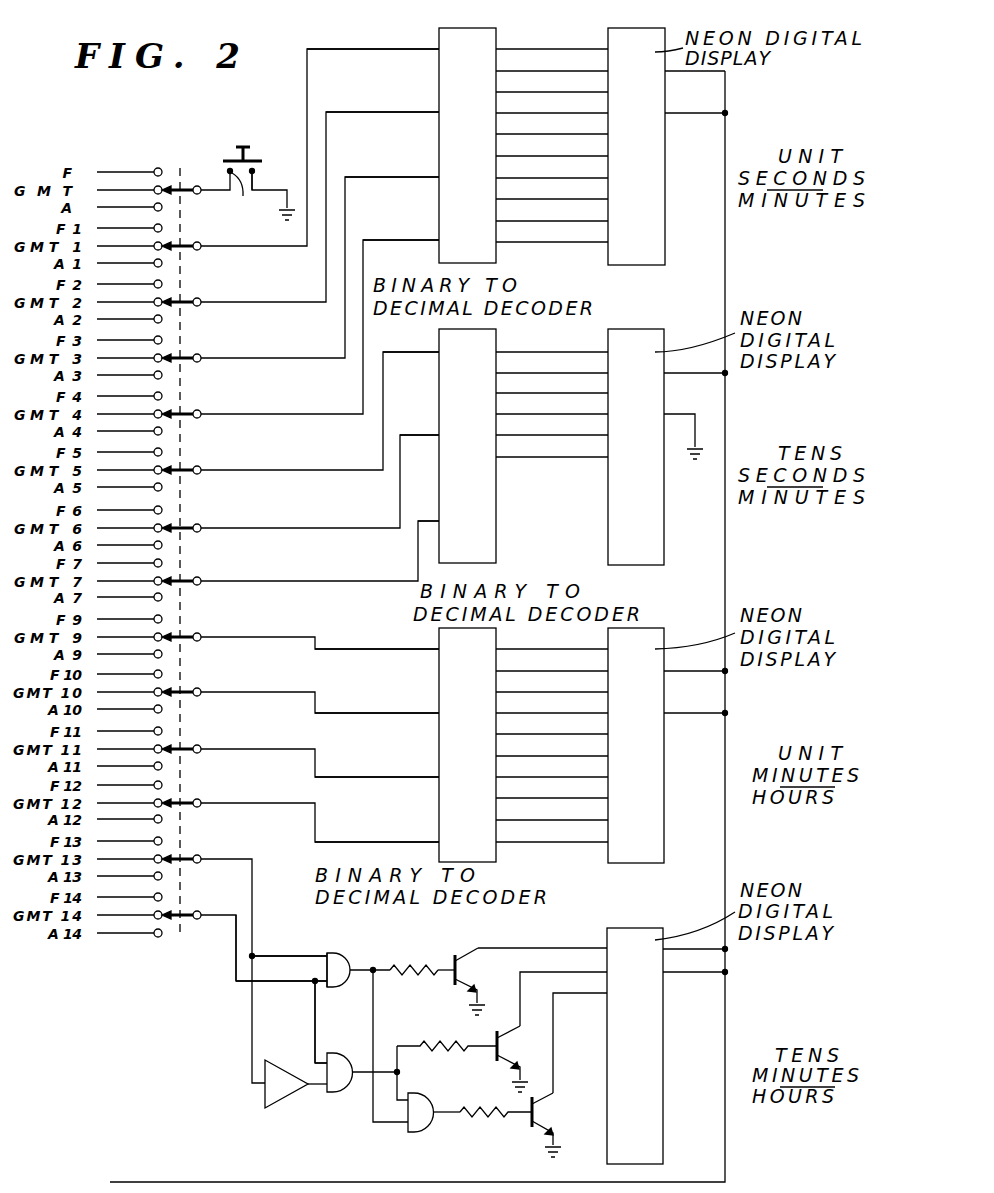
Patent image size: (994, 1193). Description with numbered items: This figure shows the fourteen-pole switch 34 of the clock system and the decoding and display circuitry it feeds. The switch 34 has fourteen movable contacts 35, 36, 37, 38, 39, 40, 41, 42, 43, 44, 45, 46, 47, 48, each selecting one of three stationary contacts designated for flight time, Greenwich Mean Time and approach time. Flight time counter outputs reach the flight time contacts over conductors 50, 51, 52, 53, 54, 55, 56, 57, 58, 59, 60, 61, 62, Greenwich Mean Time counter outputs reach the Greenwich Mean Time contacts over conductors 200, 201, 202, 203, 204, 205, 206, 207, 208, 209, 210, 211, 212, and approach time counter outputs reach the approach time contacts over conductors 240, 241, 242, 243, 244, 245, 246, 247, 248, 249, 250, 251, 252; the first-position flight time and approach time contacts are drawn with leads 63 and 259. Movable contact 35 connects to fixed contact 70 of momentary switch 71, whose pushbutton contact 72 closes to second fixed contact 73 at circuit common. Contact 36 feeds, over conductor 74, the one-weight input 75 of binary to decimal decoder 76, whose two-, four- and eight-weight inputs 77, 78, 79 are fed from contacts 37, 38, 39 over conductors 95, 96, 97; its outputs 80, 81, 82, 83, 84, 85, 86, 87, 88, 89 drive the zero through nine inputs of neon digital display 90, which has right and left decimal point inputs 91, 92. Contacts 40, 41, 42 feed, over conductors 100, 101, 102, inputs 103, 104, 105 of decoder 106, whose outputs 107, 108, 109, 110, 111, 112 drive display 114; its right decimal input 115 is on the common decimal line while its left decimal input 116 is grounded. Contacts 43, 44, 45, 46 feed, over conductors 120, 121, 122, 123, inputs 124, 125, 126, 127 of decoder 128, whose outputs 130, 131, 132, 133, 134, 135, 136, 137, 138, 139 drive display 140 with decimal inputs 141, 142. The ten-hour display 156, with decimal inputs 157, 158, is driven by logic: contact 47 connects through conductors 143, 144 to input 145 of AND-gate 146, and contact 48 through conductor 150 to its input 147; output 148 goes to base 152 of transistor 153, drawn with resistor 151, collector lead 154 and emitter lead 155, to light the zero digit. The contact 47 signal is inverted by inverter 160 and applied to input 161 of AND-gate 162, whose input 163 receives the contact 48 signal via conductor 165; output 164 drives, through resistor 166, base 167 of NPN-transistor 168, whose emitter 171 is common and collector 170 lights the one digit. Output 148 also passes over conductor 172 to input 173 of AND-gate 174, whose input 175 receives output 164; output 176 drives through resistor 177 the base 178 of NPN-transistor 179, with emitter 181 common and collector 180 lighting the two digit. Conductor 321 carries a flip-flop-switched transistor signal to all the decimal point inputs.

The 14-pole switch 34 is at (180, 167).
The movable contact 35 is at (195, 194).
The movable contact 36 is at (195, 250).
The movable contact 37 is at (195, 306).
The movable contact 38 is at (195, 362).
The movable contact 39 is at (195, 418).
The movable contact 40 is at (195, 474).
The movable contact 41 is at (195, 532).
The movable contact 42 is at (195, 585).
The movable contact 43 is at (195, 641).
The movable contact 44 is at (195, 696).
The movable contact 45 is at (195, 753).
The movable contact 46 is at (195, 807).
The movable contact 47 is at (195, 863).
The movable contact 48 is at (193, 919).
The F input line 63 is at (139, 171).
The conductor 50 is at (139, 227).
The conductor 51 is at (139, 283).
The conductor 52 is at (139, 339).
The conductor 53 is at (139, 395).
The conductor 54 is at (139, 451).
The conductor 55 is at (139, 509).
The conductor 56 is at (139, 562).
The conductor 57 is at (139, 618).
The conductor 58 is at (139, 673).
The conductor 59 is at (139, 730).
The conductor 60 is at (139, 784).
The conductor 61 is at (139, 840).
The conductor 62 is at (139, 896).
The conductor 200 is at (139, 245).
The conductor 201 is at (139, 301).
The conductor 202 is at (139, 357).
The conductor 203 is at (139, 413).
The conductor 204 is at (139, 469).
The conductor 205 is at (139, 527).
The conductor 206 is at (139, 580).
The conductor 207 is at (139, 636).
The conductor 208 is at (139, 691).
The conductor 209 is at (139, 748).
The conductor 210 is at (139, 802).
The conductor 211 is at (139, 858).
The conductor 212 is at (139, 914).
The A input line 259 is at (139, 206).
The conductor 240 is at (139, 262).
The conductor 241 is at (139, 318).
The conductor 242 is at (139, 374).
The conductor 243 is at (139, 430).
The conductor 244 is at (139, 486).
The conductor 245 is at (139, 544).
The conductor 246 is at (139, 596).
The conductor 247 is at (139, 653).
The conductor 248 is at (139, 708).
The conductor 249 is at (139, 765).
The conductor 250 is at (139, 818).
The conductor 251 is at (139, 875).
The conductor 252 is at (139, 932).
The fixed contact 70 is at (248, 195).
The momentary switch 71 is at (246, 141).
The movable pushbutton contact 72 is at (252, 158).
The second fixed contact 73 is at (256, 173).
The conductor 74 is at (353, 49).
The input 75 is at (437, 51).
The binary to decimal decoder 76 is at (496, 36).
The input 77 is at (437, 115).
The input 78 is at (437, 180).
The input 79 is at (438, 240).
The output 80 is at (502, 49).
The output 81 is at (502, 71).
The output 82 is at (502, 92).
The output 83 is at (502, 113).
The output 84 is at (502, 134).
The output 85 is at (502, 156).
The output 86 is at (502, 178).
The output 87 is at (502, 199).
The output 88 is at (502, 221).
The output 89 is at (502, 242).
The neon digital display 90 is at (663, 38).
The right decimal point input 91 is at (667, 72).
The left decimal point input 92 is at (667, 114).
The conductor 321 is at (728, 137).
The conductor 95 is at (295, 304).
The conductor 96 is at (295, 360).
The conductor 97 is at (295, 416).
The conductor 100 is at (287, 472).
The conductor 101 is at (287, 530).
The conductor 102 is at (287, 583).
The input 103 is at (437, 355).
The input 104 is at (437, 438).
The input 105 is at (437, 518).
The binary to decimal decoder 106 is at (498, 512).
The output 107 is at (502, 352).
The output 108 is at (502, 373).
The output 109 is at (502, 393).
The output 110 is at (502, 414).
The output 111 is at (502, 435).
The output 112 is at (502, 457).
The neon digital display 114 is at (665, 524).
The right decimal input 115 is at (667, 375).
The left decimal input 116 is at (697, 415).
The conductor 120 is at (287, 639).
The conductor 121 is at (287, 694).
The conductor 122 is at (287, 751).
The conductor 123 is at (282, 805).
The input 124 is at (437, 652).
The input 125 is at (437, 716).
The input 126 is at (437, 780).
The input 127 is at (437, 843).
The binary to decimal decoder 128 is at (497, 862).
The output 130 is at (502, 649).
The output 131 is at (502, 671).
The output 132 is at (502, 692).
The output 133 is at (502, 713).
The output 134 is at (502, 734).
The output 135 is at (502, 756).
The output 136 is at (502, 777).
The output 137 is at (502, 798).
The output 138 is at (502, 820).
The output 139 is at (502, 842).
The neon digital display 140 is at (640, 864).
The right decimal input 141 is at (667, 672).
The left decimal input 142 is at (667, 713).
The conductor 143 is at (254, 900).
The conductor 144 is at (288, 955).
The input 145 is at (327, 958).
The AND-gate 146 is at (339, 956).
The second input 147 is at (316, 986).
The output 148 is at (353, 968).
The conductor 150 is at (236, 958).
The resistor 151 is at (410, 962).
The base 152 is at (452, 954).
The transistor 153 is at (462, 964).
The collector lead 154 is at (479, 947).
The emitter to ground 155 is at (466, 992).
The neon digital display 156 is at (664, 1066).
The right decimal input 157 is at (667, 948).
The left decimal input 158 is at (666, 974).
The inverter 160 is at (266, 1097).
The input 161 is at (325, 1088).
The AND-gate 162 is at (340, 1056).
The input 163 is at (315, 1062).
The output 164 is at (349, 1082).
The conductor 165 is at (314, 1017).
The resistor 166 is at (427, 1040).
The base 167 is at (483, 1038).
The NPN-transistor 168 is at (503, 1043).
The collector 170 is at (515, 1028).
The emitter 171 is at (506, 1060).
The conductor 172 is at (373, 1020).
The input 173 is at (408, 1128).
The AND-gate 174 is at (424, 1131).
The input 175 is at (400, 1100).
The output 176 is at (434, 1110).
The resistor 177 is at (483, 1117).
The base 178 is at (528, 1122).
The NPN-transistor 179 is at (549, 1110).
The collector 180 is at (548, 1098).
The emitter 181 is at (552, 1125).